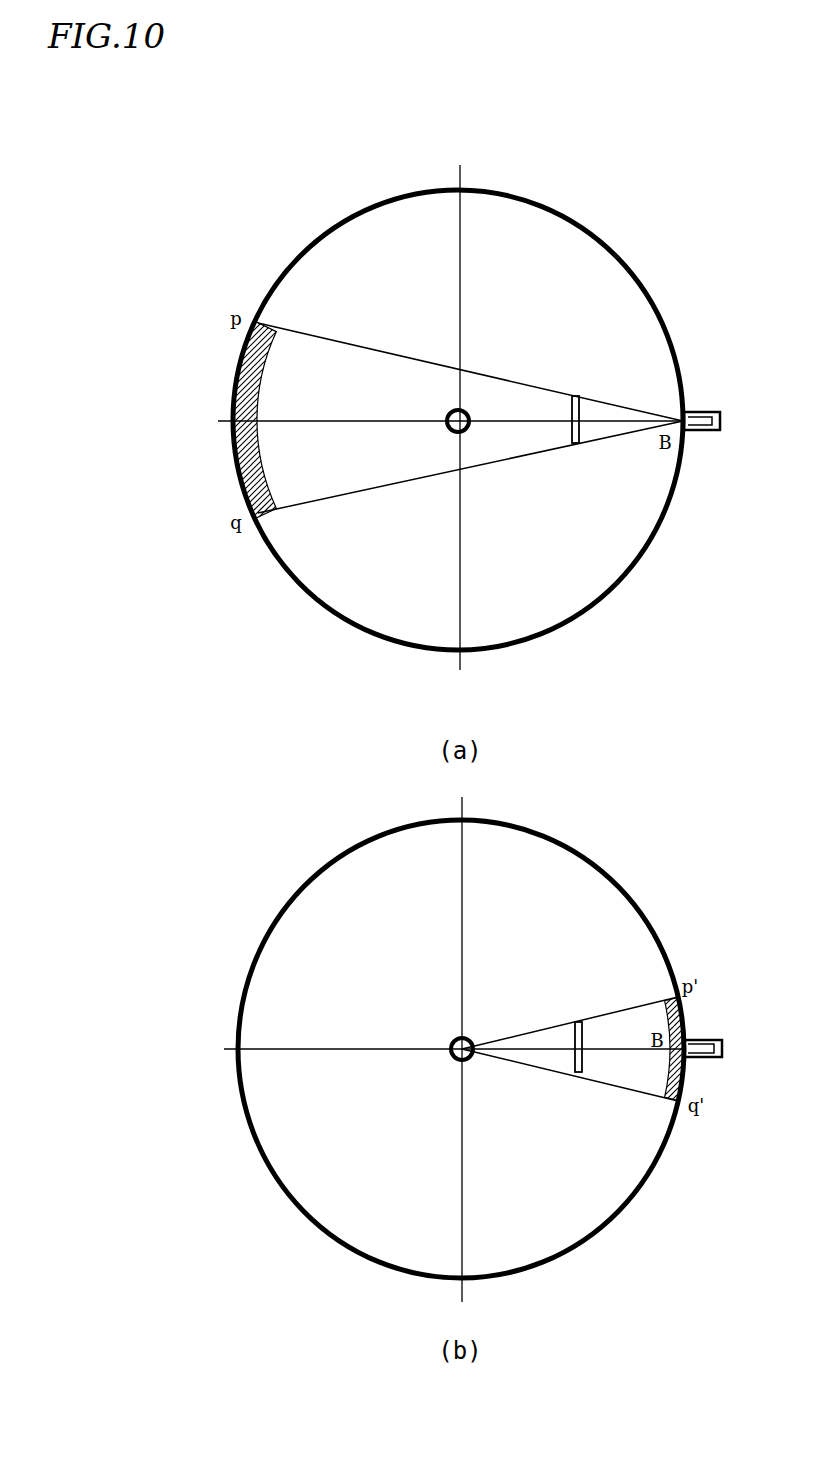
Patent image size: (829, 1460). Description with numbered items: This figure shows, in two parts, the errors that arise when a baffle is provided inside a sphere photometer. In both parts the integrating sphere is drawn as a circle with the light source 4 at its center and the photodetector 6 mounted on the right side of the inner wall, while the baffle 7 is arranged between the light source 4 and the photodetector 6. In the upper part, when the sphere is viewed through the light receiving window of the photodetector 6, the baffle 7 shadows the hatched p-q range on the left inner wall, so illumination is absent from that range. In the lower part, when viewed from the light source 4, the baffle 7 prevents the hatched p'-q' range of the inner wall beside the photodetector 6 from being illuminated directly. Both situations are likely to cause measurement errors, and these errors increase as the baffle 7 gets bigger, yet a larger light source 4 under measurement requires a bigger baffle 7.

The light source 4 is at (452, 747).
The photodetector 6 is at (703, 722).
The baffle 7 is at (574, 720).